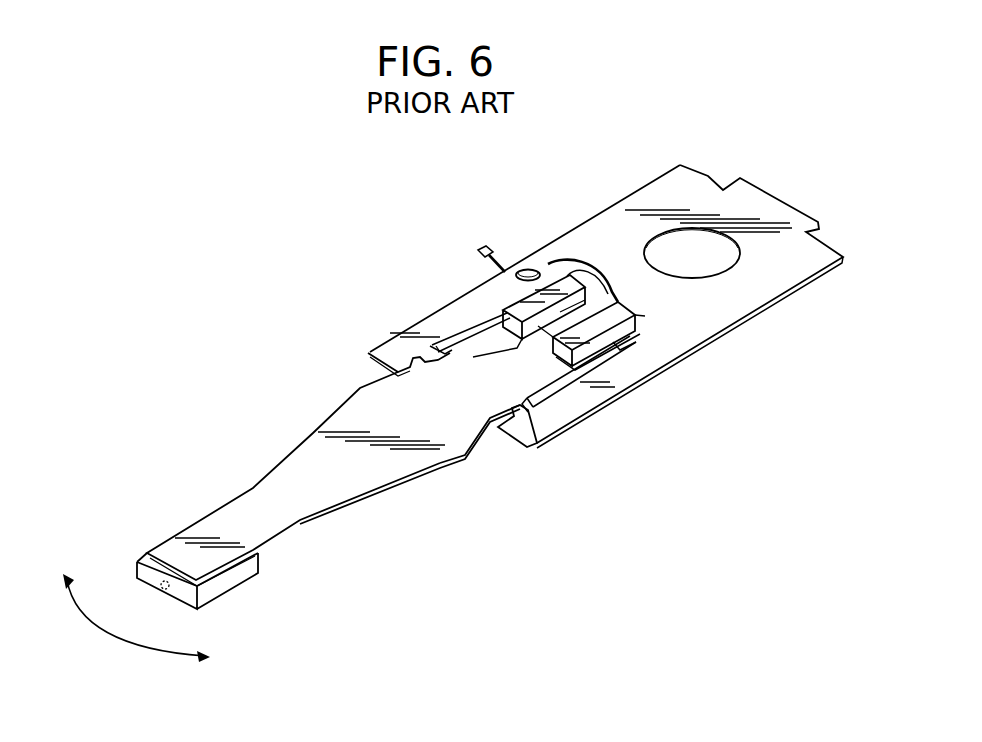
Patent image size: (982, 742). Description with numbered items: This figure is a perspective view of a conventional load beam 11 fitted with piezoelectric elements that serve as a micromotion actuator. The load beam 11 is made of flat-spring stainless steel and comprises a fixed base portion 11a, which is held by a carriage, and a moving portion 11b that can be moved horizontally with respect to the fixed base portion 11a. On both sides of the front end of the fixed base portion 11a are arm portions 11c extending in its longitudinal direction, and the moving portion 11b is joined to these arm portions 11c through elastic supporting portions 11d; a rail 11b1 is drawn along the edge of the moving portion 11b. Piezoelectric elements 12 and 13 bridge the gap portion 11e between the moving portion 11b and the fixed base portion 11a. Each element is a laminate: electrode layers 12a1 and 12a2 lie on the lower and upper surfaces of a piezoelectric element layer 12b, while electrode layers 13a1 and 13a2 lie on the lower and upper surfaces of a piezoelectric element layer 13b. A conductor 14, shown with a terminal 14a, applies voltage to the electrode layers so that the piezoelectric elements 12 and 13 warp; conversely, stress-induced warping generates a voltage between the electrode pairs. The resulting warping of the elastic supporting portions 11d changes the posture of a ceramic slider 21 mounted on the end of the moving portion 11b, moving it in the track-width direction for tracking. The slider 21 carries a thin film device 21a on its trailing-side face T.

The load beam 11 is at (620, 401).
The fixed base portion 11a is at (772, 268).
The moving portion 11b is at (373, 457).
The bent rail of arm portion 11b1 is at (532, 343).
The arm portions 11c is at (437, 335).
The elastic supporting portions 11d is at (397, 358).
The gap portion 11e is at (552, 335).
The piezoelectric element 12 is at (630, 302).
The electrode layer 12a1 is at (620, 353).
The electrode layer 12a2 is at (645, 316).
The piezoelectric element layer 12b is at (630, 340).
The piezoelectric element 13 is at (524, 270).
The electrode layer 13a1 is at (442, 330).
The electrode layer 13a2 is at (483, 328).
The piezoelectric element layer 13b is at (525, 305).
The conductor 14 is at (553, 268).
The connecting pin 14a is at (486, 247).
The slider 21 is at (223, 582).
The thin film device 21a is at (161, 588).
The trailing-side face T is at (128, 566).